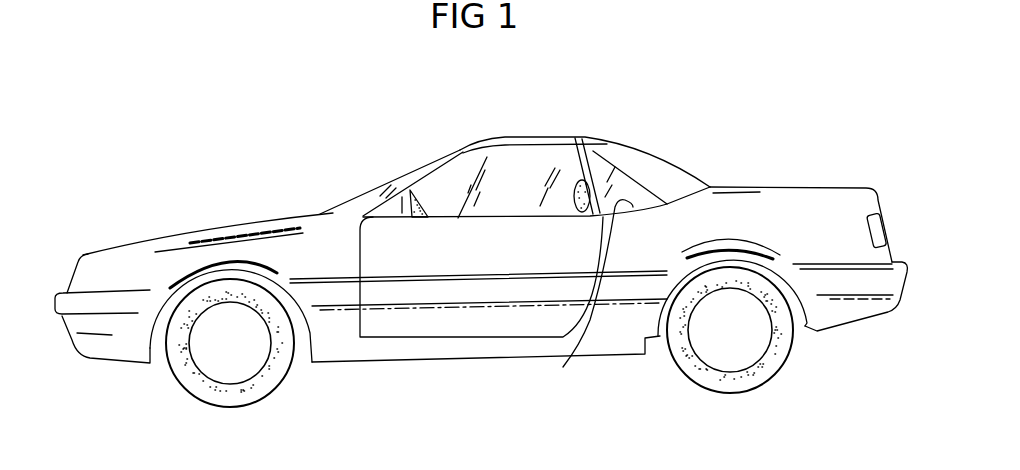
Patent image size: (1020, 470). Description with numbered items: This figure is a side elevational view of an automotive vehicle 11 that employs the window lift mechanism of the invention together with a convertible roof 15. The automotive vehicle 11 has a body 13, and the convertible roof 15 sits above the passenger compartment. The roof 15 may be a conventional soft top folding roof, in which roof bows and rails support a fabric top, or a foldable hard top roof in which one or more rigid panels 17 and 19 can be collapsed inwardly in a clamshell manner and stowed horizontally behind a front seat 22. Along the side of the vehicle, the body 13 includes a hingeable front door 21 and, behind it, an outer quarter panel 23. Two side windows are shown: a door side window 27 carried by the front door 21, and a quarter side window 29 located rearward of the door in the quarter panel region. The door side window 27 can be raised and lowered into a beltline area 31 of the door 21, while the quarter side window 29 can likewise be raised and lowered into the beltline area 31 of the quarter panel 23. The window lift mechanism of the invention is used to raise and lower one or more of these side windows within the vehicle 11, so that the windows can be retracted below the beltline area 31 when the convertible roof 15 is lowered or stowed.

The automotive vehicle 11 is at (268, 170).
The body 13 is at (615, 356).
The convertible roof 15 is at (520, 138).
The rigid panel 17 is at (487, 140).
The rigid panel 19 is at (655, 163).
The front door 21 is at (437, 330).
The front seat 22 is at (575, 184).
The outer quarter panel 23 is at (643, 243).
The door side window 27 is at (440, 183).
The quarter side window 29 is at (603, 170).
The beltline area 31 is at (563, 367).